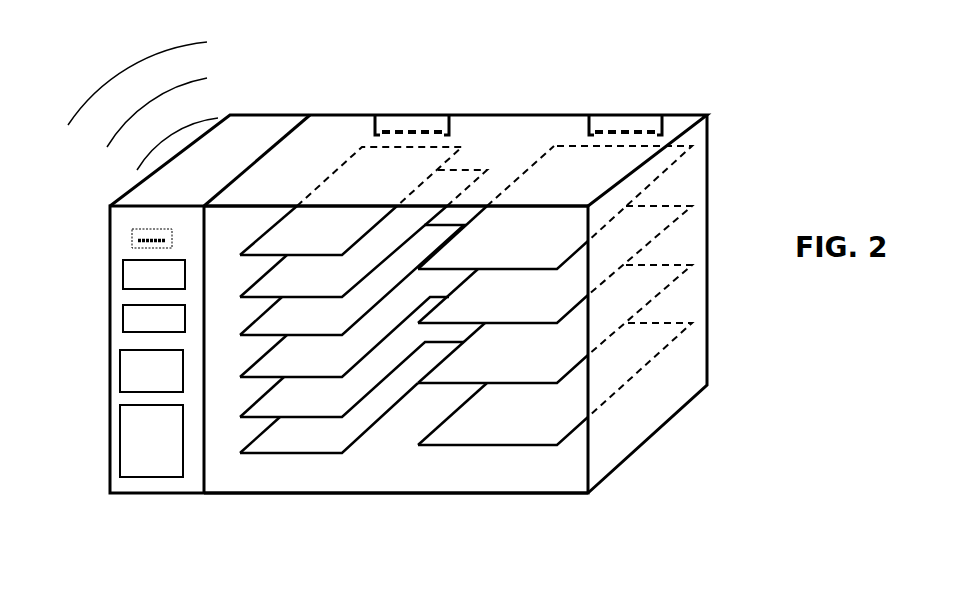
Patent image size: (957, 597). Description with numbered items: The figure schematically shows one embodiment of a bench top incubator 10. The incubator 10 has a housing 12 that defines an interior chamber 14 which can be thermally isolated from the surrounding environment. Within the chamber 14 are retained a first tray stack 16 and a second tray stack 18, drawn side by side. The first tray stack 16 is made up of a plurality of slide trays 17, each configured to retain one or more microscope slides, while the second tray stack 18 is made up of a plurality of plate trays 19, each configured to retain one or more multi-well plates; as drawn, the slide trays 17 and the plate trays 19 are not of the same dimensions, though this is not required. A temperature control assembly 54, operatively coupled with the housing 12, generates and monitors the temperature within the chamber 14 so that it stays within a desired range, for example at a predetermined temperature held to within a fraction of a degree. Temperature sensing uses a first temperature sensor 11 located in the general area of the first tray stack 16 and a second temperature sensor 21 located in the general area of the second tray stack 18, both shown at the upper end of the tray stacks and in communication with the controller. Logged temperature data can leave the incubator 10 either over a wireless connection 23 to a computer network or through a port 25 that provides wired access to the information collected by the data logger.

The bench top incubator 10 is at (752, 122).
The first temperature sensor 11 is at (404, 120).
The housing 12 is at (708, 373).
The interior chamber 14 is at (348, 473).
The first tray stack 16 is at (252, 473).
The slide trays 17 is at (324, 239).
The second tray stack 18 is at (677, 237).
The plate trays 19 is at (523, 251).
The second temperature sensor 21 is at (618, 122).
The wireless connection (WLAN) 23 is at (206, 58).
The port 25 is at (132, 240).
The temperature control assembly 54 is at (122, 337).